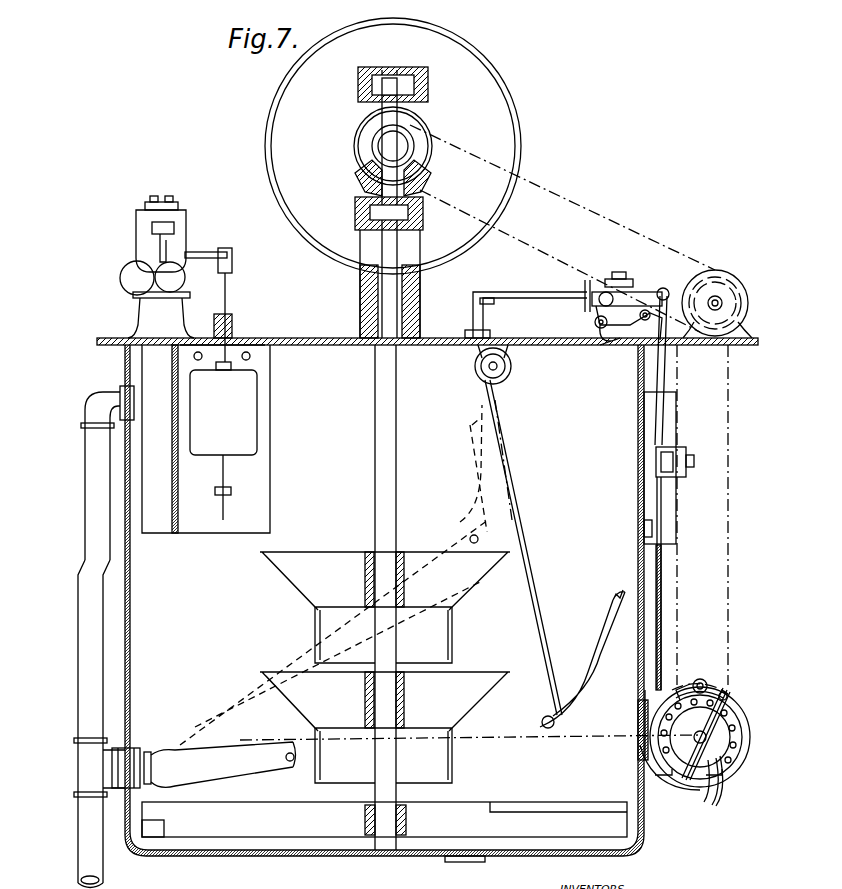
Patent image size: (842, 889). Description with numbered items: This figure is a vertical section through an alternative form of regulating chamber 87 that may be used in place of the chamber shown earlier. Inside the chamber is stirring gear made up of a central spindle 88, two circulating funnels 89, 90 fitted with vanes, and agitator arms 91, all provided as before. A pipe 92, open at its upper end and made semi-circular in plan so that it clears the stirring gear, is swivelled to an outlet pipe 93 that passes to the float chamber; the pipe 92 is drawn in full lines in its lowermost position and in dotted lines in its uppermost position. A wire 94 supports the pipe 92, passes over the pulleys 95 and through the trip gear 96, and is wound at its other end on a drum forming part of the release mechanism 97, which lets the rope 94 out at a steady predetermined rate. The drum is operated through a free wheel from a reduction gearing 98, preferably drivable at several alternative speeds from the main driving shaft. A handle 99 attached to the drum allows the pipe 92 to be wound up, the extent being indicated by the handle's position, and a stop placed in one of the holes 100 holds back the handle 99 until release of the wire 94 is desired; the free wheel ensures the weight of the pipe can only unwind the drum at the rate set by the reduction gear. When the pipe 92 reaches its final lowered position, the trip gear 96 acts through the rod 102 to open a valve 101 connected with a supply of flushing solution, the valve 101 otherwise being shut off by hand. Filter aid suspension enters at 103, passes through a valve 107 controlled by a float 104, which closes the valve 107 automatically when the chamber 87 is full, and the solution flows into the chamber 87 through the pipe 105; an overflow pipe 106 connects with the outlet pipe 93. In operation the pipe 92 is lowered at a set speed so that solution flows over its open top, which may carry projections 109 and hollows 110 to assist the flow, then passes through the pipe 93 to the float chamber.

The regulating chamber 87 is at (648, 492).
The central spindle 88 is at (395, 432).
The circulating funnel 89 is at (478, 585).
The circulating funnel 90 is at (475, 674).
The agitator arms 91 is at (200, 812).
The pipe 92 is at (478, 505).
The outlet pipe 93 is at (84, 862).
The wire 94 is at (540, 614).
The pulleys 95 is at (490, 290).
The trip gear 96 is at (666, 426).
The release mechanism 97 is at (688, 755).
The reduction gearing 98 is at (712, 280).
The handle 99 is at (726, 704).
The holes 100 is at (714, 797).
The valve 101 is at (618, 278).
The rod 102 is at (670, 385).
The inlet 103 is at (150, 226).
The float 104 is at (240, 398).
The pipe 105 is at (160, 470).
The overflow pipe 106 is at (98, 504).
The valve 107 is at (165, 232).
The projections 109 is at (490, 404).
The hollows 110 is at (532, 532).